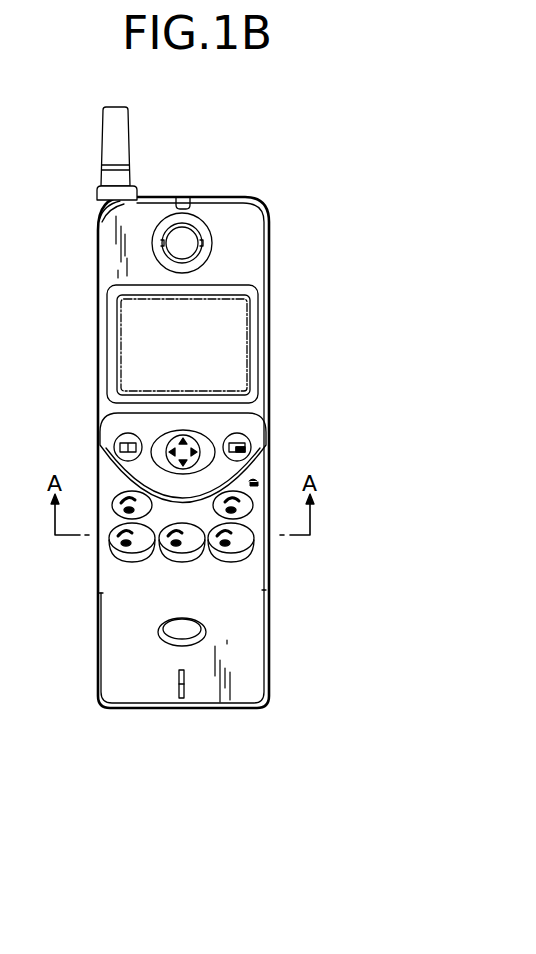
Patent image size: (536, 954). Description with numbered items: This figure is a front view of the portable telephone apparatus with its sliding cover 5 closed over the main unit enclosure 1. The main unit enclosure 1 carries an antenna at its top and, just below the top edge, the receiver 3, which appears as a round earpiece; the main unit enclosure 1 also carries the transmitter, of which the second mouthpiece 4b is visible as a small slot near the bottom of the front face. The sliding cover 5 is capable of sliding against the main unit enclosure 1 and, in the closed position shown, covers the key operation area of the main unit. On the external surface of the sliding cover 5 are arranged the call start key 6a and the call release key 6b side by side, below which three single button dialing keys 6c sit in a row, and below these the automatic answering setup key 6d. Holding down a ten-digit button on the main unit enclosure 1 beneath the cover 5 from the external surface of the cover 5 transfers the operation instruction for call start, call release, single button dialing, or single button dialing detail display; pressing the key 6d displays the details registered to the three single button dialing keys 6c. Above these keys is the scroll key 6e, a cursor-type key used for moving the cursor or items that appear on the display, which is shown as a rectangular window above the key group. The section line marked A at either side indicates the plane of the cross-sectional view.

The main unit enclosure 1 is at (237, 222).
The receiver 3 is at (203, 247).
The sliding cover 5 is at (245, 681).
The call start key 6a is at (113, 503).
The call release key 6b is at (254, 500).
The single button dialing keys 6c is at (137, 560).
The automatic answering setup key 6d is at (160, 633).
The scroll key 6e is at (165, 446).
The second mouthpiece 4b is at (176, 677).